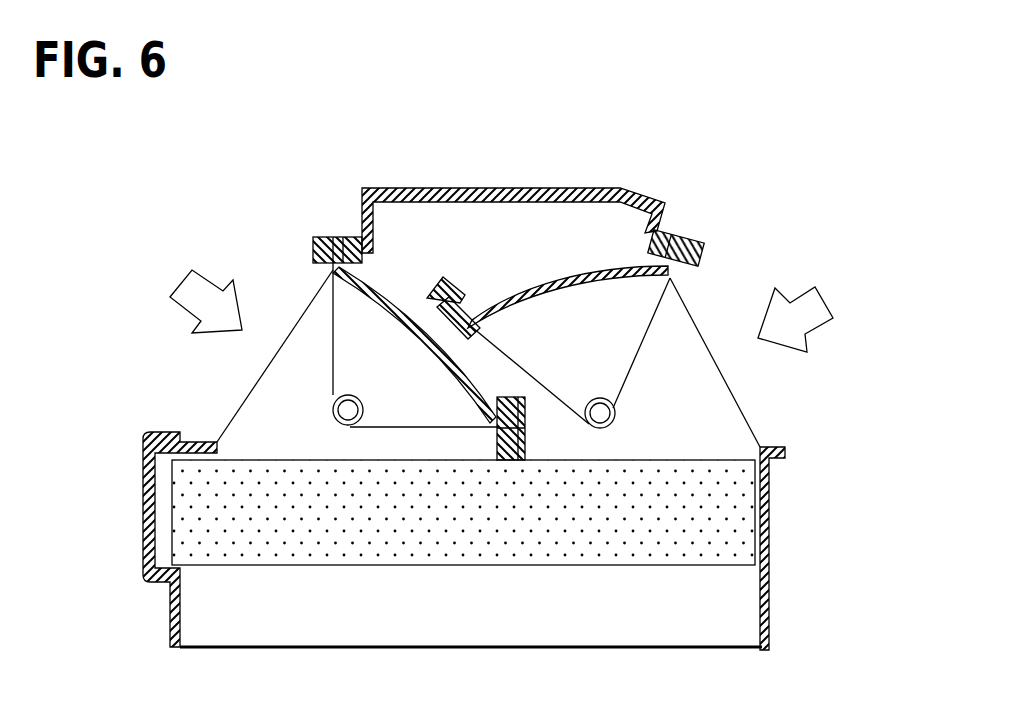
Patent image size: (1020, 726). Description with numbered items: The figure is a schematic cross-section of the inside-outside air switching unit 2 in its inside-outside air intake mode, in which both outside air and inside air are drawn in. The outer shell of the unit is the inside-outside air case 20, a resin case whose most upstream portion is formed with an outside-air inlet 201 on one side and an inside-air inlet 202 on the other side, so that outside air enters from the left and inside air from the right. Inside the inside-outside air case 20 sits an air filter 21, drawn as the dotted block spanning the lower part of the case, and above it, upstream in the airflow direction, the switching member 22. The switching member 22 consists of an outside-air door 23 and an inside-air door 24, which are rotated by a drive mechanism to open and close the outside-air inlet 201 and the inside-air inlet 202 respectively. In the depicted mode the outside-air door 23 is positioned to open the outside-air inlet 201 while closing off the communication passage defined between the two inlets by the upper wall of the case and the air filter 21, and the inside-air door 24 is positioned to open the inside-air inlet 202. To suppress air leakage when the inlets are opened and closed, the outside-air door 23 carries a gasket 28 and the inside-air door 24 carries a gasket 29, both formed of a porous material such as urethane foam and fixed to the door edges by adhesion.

The inside-outside air switching unit 2 is at (728, 207).
The inside-outside air case 20 is at (770, 504).
The air filter 21 is at (735, 527).
The switching member 22 is at (468, 121).
The outside-air door 23 is at (375, 292).
The inside-air door 24 is at (482, 322).
The gasket 28 is at (327, 237).
The gasket 29 is at (488, 323).
The outside-air inlet 201 is at (267, 375).
The inside-air inlet 202 is at (745, 405).